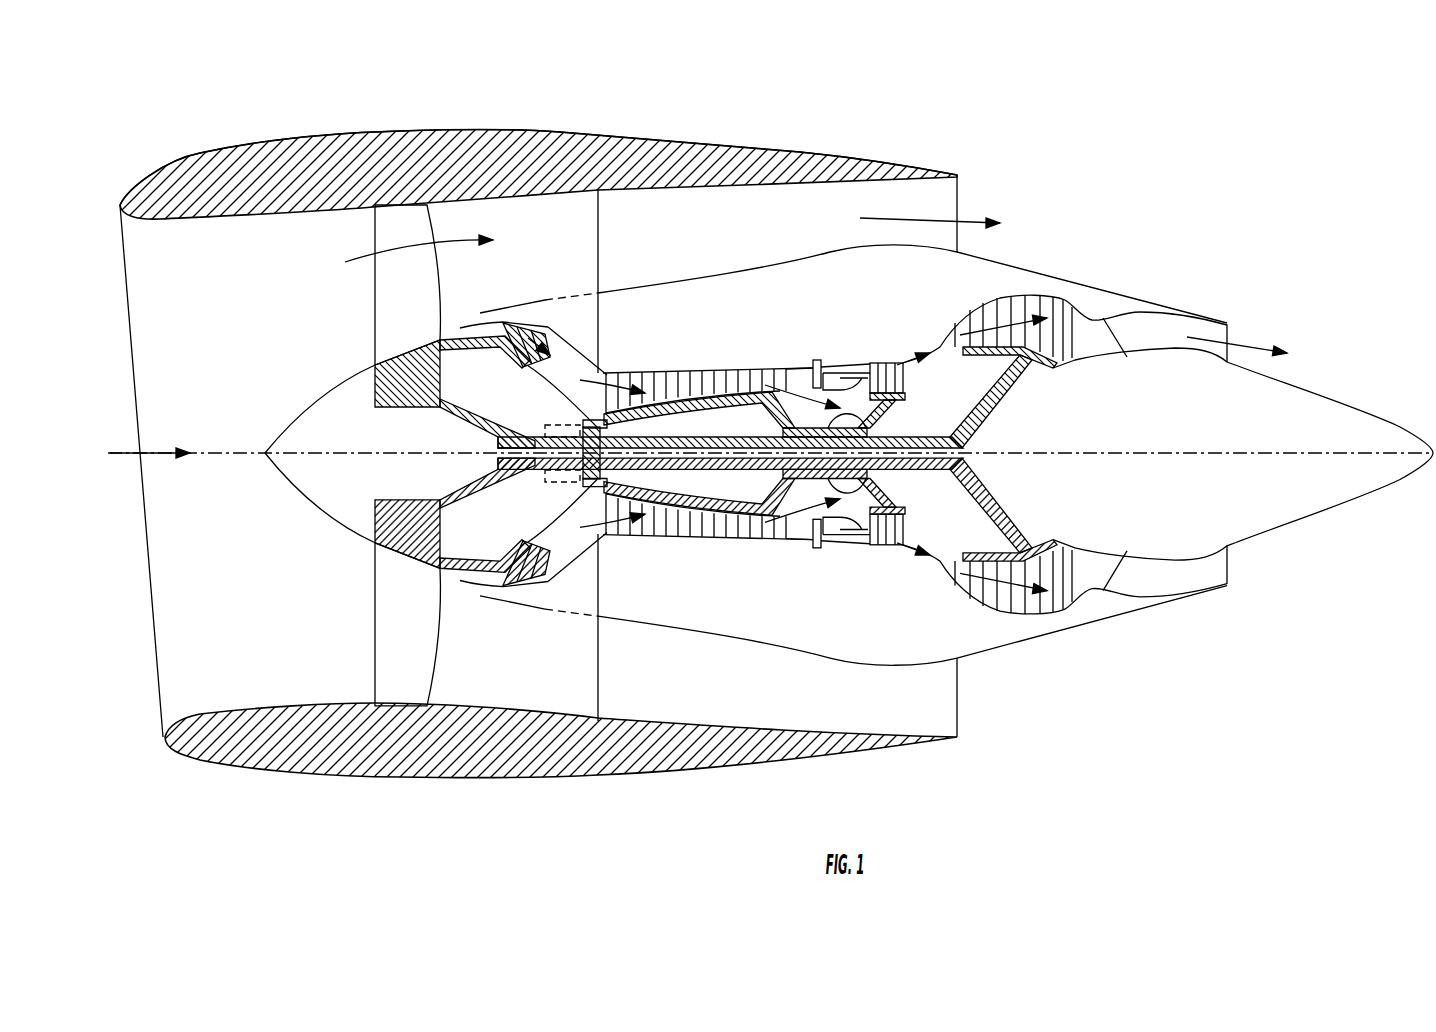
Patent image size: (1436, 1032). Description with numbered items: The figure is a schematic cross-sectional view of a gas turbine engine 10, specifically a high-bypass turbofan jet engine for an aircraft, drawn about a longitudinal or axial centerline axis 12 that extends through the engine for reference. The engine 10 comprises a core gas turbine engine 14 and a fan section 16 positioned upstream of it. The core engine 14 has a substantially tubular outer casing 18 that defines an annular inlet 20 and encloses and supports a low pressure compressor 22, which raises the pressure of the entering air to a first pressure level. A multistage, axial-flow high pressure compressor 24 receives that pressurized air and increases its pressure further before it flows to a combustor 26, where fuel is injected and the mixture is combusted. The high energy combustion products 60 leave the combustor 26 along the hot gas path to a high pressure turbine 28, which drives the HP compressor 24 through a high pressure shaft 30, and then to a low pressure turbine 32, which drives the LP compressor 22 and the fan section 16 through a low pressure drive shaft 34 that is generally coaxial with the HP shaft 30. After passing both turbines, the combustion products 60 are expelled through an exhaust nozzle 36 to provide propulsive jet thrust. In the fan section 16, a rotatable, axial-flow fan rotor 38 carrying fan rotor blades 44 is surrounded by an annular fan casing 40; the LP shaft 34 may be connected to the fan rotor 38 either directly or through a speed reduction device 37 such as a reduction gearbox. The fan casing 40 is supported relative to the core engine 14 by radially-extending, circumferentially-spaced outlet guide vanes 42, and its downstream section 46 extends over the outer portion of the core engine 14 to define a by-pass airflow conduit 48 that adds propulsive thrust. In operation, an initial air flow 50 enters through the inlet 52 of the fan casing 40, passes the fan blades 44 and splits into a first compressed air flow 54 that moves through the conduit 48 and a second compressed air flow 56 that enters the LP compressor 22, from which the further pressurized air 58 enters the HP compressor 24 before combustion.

The gas turbine engine 10 is at (1125, 140).
The longitudinal centerline axis 12 is at (1167, 453).
The core gas turbine engine 14 is at (795, 318).
The fan section 16 is at (420, 115).
The outer casing 18 is at (773, 647).
The annular inlet 20 is at (477, 582).
The low pressure compressor 22 is at (557, 553).
The high pressure compressor 24 is at (633, 528).
The combustor 26 is at (838, 553).
The high pressure turbine 28 is at (913, 533).
The high pressure shaft 30 is at (873, 405).
The low pressure turbine 32 is at (1057, 603).
The low pressure drive shaft 34 is at (560, 427).
The exhaust nozzle 36 is at (1227, 333).
The speed reduction device 37 is at (570, 427).
The fan rotor 38 is at (437, 412).
The fan casing 40 is at (425, 777).
The outlet guide vanes 42 is at (598, 218).
The fan rotor blades 44 is at (373, 648).
The downstream section of the fan casing 46 is at (835, 155).
The by-pass airflow conduit 48 is at (726, 228).
The initial air flow 50 is at (152, 450).
The inlet 52 is at (158, 700).
The first compressed air flow 54 is at (393, 250).
The second compressed air flow 56 is at (460, 327).
The air flow entering the HP compressor 58 is at (620, 373).
The combustion products 60 is at (890, 363).